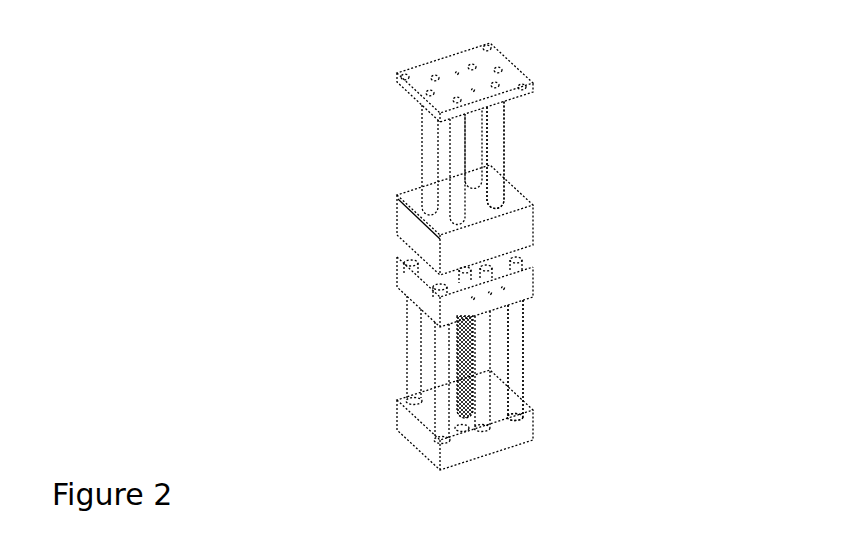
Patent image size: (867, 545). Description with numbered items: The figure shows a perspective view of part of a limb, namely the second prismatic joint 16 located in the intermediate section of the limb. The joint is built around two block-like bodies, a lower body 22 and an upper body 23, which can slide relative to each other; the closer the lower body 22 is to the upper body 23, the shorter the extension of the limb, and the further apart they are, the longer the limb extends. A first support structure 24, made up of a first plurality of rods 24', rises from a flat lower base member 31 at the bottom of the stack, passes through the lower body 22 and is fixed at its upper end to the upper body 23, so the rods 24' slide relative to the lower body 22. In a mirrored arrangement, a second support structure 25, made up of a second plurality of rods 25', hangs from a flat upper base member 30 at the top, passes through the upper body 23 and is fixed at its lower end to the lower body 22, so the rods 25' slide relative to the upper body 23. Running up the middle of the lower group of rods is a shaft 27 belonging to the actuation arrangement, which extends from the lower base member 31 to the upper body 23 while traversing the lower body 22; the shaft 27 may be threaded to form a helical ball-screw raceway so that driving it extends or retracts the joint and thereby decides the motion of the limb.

The upper base member 30 is at (528, 79).
The second support structure 25 is at (552, 163).
The second plurality of rods 25' is at (559, 140).
The upper body 23 is at (395, 225).
The lower body 22 is at (397, 270).
The second prismatic joint 16 is at (433, 290).
The first support structure 24 is at (556, 368).
The first plurality of rods 24' is at (591, 338).
The shaft 27 is at (472, 372).
The lower base member 31 is at (533, 418).